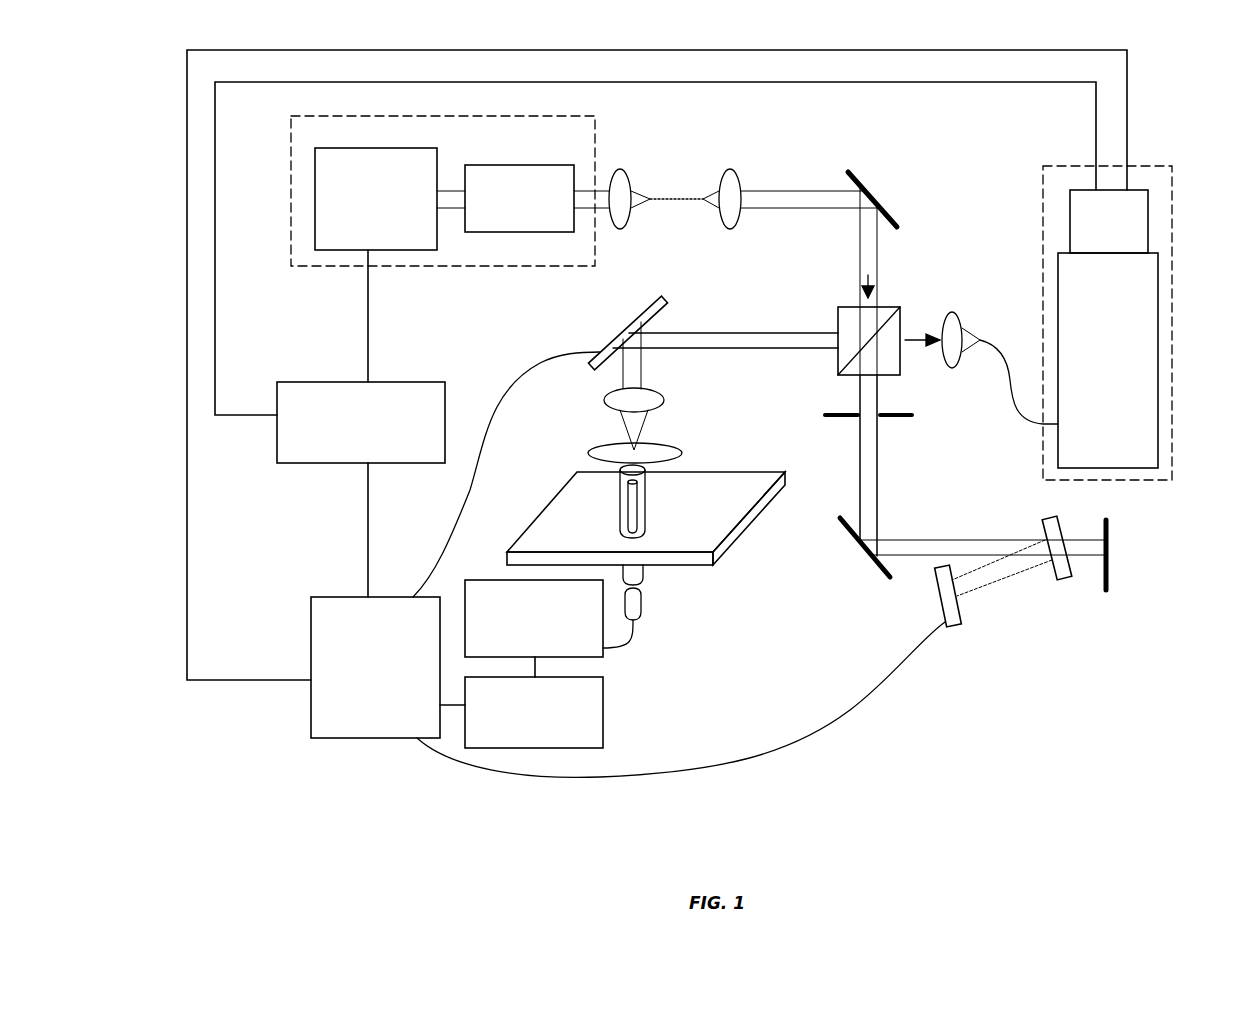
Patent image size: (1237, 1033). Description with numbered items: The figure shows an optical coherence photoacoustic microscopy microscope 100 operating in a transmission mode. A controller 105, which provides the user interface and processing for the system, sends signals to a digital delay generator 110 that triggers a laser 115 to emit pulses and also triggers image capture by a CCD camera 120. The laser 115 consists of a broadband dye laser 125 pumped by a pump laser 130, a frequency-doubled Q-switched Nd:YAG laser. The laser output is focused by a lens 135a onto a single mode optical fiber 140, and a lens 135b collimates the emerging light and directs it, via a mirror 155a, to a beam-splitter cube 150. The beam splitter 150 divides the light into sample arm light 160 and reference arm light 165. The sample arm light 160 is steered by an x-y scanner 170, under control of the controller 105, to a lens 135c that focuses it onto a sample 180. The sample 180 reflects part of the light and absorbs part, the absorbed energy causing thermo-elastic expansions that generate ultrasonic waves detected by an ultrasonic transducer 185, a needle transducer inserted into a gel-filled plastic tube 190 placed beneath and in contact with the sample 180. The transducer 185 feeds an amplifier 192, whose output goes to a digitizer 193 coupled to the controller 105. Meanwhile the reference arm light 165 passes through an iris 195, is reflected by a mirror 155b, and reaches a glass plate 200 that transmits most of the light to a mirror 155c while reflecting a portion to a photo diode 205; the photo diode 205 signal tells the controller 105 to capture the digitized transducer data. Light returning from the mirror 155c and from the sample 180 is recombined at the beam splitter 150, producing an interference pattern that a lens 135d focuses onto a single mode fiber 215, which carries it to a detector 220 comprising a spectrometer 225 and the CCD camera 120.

The optical coherence photoacoustic microscopy microscope 100 is at (1178, 101).
The controller 105 is at (375, 667).
The digital delay generator 110 is at (361, 422).
The laser 115 is at (311, 272).
The charge coupled device camera 120 is at (1109, 221).
The broadband dye laser 125 is at (519, 198).
The pump laser 130 is at (376, 199).
The lens 135a is at (622, 170).
The lens 135b is at (736, 170).
The lens 135c is at (668, 392).
The lens 135d is at (948, 368).
The single mode optical fiber 140 is at (686, 197).
The beam-splitter cube 150 is at (890, 308).
The mirror 155a is at (858, 172).
The mirror 155b is at (873, 565).
The mirror 155c is at (1110, 567).
The sample arm light 160 is at (757, 333).
The reference arm light 165 is at (878, 481).
The x-y scanner 170 is at (622, 330).
The sample 180 is at (598, 448).
The ultrasonic transducer 185 is at (648, 506).
The plastic tube 190 is at (625, 507).
The amplifier 192 is at (534, 618).
The digitizer 193 is at (534, 712).
The iris 195 is at (831, 418).
The glass plate 200 is at (1067, 578).
The photo diode 205 is at (955, 628).
The single mode fiber 215 is at (1007, 347).
The detector 220 is at (1176, 423).
The spectrometer 225 is at (1108, 360).